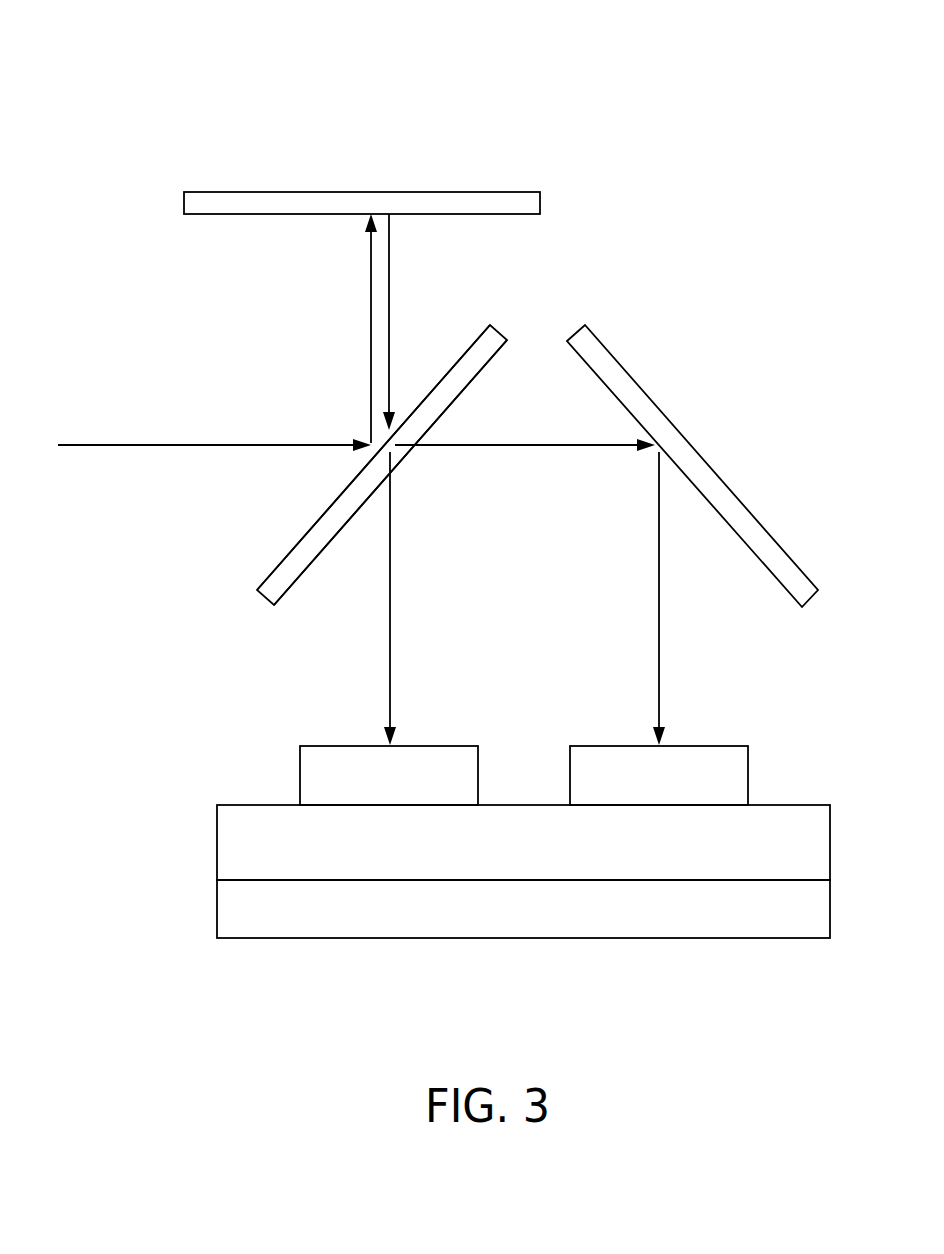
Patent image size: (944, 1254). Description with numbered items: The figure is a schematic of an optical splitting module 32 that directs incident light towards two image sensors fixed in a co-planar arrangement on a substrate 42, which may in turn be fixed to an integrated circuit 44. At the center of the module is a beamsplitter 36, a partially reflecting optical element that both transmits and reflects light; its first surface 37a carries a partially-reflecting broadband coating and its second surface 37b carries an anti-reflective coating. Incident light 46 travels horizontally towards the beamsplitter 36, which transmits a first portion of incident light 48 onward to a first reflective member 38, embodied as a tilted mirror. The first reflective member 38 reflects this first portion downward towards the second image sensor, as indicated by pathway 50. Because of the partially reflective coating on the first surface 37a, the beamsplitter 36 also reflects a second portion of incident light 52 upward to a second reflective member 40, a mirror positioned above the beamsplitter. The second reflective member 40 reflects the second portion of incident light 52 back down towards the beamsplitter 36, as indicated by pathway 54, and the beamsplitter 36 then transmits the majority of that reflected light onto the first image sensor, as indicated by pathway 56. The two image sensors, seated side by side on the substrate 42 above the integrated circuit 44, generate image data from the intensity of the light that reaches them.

The optical splitting module 32 is at (138, 113).
The beamsplitter 36 is at (272, 592).
The first surface 37a is at (303, 533).
The second surface 37b is at (457, 397).
The first reflective member 38 is at (601, 356).
The second reflective member 40 is at (210, 210).
The substrate 42 is at (237, 832).
The integrated circuit 44 is at (217, 915).
The incident light 46 is at (120, 445).
The first portion of incident light 48 is at (523, 447).
The pathway 50 is at (659, 600).
The second portion of incident light 52 is at (370, 335).
The pathway 54 is at (389, 303).
The pathway 56 is at (390, 600).